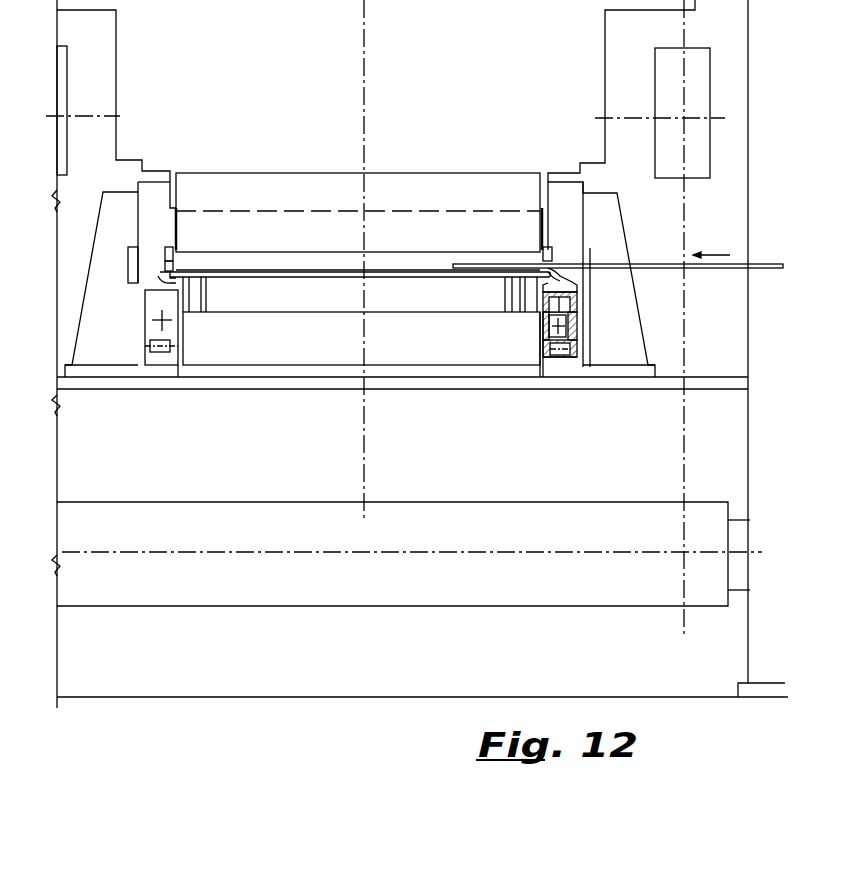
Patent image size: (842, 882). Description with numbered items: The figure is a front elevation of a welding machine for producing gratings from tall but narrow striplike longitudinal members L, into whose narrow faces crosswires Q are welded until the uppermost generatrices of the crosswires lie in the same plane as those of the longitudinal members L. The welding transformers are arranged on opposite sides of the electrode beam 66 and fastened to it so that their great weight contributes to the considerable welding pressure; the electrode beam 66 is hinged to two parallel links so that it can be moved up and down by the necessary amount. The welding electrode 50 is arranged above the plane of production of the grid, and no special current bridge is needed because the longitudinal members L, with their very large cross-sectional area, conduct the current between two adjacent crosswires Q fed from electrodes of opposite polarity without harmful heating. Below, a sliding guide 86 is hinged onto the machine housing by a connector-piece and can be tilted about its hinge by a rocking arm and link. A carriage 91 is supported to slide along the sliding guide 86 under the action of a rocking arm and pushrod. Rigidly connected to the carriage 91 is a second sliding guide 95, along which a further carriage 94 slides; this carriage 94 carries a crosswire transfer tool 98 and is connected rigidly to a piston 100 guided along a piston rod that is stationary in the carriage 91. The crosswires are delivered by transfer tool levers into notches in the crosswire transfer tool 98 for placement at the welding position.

The electrode beam 66 is at (556, 105).
The welding electrode 50 is at (303, 265).
The crosswire Q is at (668, 269).
The crosswire transfer tool 98 is at (160, 279).
The longitudinal member L is at (205, 300).
The second sliding guide 95 is at (540, 316).
The carriage 94 is at (578, 307).
The piston 100 is at (578, 328).
The carriage 91 is at (578, 348).
The sliding guide 86 is at (158, 352).